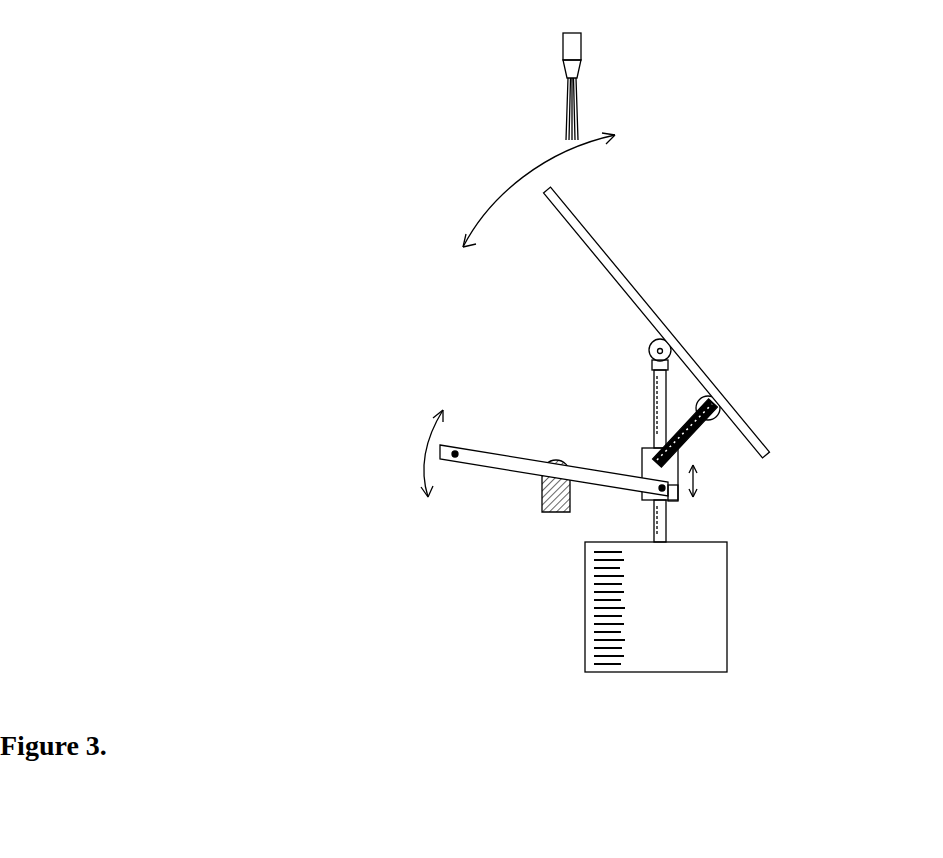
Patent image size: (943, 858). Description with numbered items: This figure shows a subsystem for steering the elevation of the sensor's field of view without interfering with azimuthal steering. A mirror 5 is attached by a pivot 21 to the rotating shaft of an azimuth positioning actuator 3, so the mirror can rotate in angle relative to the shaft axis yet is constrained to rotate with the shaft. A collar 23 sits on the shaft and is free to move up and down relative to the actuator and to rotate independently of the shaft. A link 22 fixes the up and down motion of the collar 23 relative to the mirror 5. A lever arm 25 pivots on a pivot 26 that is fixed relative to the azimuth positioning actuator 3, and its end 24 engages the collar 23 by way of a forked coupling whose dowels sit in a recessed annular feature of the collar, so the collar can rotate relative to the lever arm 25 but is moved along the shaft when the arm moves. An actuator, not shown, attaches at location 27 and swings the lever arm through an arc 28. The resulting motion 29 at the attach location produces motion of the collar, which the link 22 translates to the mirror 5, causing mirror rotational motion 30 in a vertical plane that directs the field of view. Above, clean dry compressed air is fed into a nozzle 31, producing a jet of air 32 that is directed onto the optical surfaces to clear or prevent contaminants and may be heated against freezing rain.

The azimuth positioning actuator 3 is at (710, 602).
The mirror 5 is at (600, 253).
The pivot joint 21 is at (655, 343).
The link 22 is at (690, 440).
The collar 23 is at (642, 448).
The slider / link end 24 is at (678, 500).
The lever arm 25 is at (500, 453).
The pivot 26 is at (543, 507).
The actuator attach location 27 is at (456, 452).
The lever swing direction arrow 28 is at (421, 453).
The motion 29 is at (705, 484).
The mirror rotational motion 30 is at (539, 190).
The nozzle 31 is at (581, 48).
The jet of air 32 is at (575, 106).